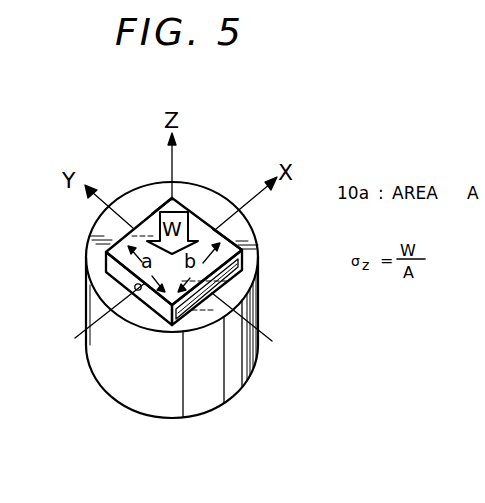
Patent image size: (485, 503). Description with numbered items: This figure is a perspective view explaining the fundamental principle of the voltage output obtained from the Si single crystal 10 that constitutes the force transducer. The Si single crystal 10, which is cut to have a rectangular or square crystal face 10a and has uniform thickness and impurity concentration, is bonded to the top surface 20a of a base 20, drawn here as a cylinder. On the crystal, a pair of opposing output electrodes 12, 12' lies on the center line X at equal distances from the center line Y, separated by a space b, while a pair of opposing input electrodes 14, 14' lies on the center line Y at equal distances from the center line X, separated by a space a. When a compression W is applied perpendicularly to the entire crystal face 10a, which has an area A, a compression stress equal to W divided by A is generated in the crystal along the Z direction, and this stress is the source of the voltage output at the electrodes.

The Si single crystal 10 is at (158, 307).
The crystal face 10a is at (200, 228).
The output electrode 12 is at (95, 298).
The output electrode 12' is at (256, 228).
The input electrode 14 is at (239, 289).
The input electrode 14' is at (140, 178).
The base 20 is at (215, 397).
The top surface of base 20a is at (197, 198).